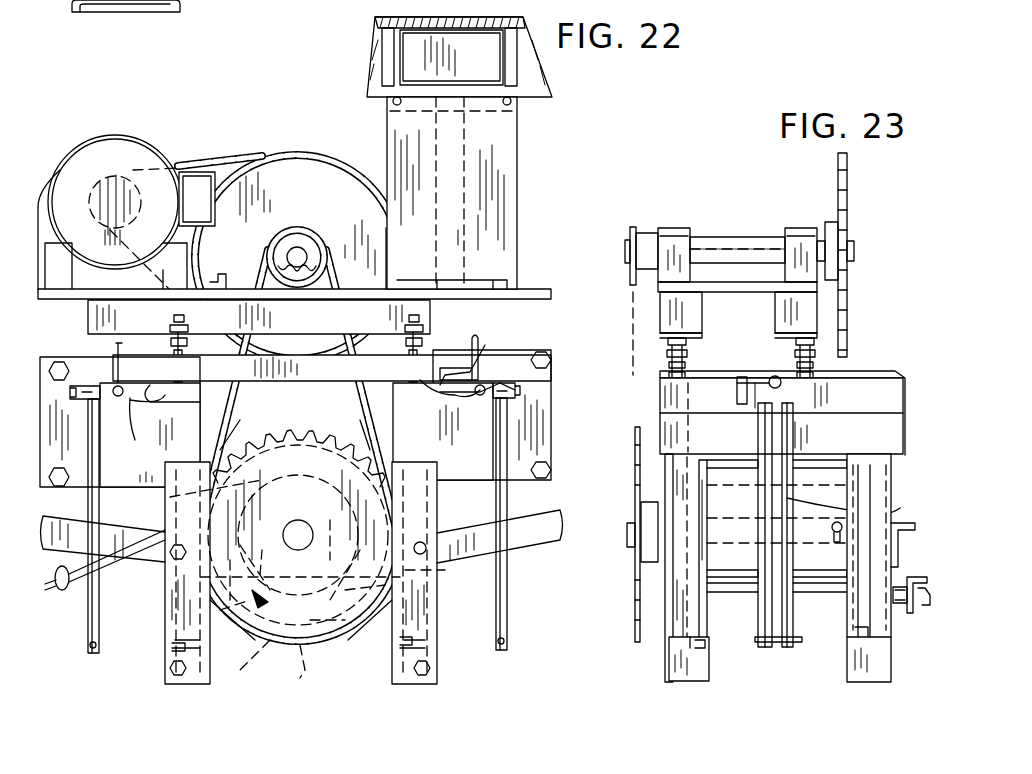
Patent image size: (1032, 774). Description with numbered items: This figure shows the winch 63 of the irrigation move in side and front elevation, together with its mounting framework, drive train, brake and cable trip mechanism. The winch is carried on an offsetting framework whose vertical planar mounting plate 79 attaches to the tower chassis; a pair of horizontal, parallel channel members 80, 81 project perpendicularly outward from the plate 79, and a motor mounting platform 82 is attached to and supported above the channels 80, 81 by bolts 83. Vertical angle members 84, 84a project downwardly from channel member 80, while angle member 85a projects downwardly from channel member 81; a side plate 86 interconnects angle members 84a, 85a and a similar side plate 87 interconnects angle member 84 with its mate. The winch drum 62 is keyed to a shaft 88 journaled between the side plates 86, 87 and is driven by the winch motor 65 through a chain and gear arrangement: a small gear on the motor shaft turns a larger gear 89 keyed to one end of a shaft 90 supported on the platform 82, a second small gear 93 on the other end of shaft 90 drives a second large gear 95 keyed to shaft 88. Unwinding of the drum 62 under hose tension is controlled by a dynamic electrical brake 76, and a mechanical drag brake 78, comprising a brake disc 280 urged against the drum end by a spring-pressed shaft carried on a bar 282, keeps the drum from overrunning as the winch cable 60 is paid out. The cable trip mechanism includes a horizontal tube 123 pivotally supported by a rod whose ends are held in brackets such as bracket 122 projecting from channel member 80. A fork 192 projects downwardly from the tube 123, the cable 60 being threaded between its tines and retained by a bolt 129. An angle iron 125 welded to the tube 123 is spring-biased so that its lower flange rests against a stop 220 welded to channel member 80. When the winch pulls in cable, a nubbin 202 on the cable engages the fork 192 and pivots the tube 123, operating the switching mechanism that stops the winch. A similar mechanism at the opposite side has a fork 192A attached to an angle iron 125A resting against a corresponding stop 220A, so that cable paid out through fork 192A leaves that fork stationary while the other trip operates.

In FIG. 22, the winch cable 60 is at (105, 560).
In FIG. 22, the winch drum 62 is at (316, 666).
In FIG. 23, the winch drum 62 is at (735, 585).
In FIG. 22, the winch 63 is at (288, 150).
In FIG. 23, the winch 63 is at (750, 226).
In FIG. 22, the winch motor 65 is at (147, 20).
In FIG. 22, the dynamic electrical brake 76 is at (517, 155).
In FIG. 23, the mechanical drag brake 78 is at (903, 612).
In FIG. 22, the vertical planar mounting plate 79 is at (545, 440).
In FIG. 22, the channel member 80 is at (390, 440).
In FIG. 23, the channel member 80 is at (888, 438).
In FIG. 22, the channel member 81 is at (164, 438).
In FIG. 22, the motor mounting platform 82 is at (445, 300).
In FIG. 23, the motor mounting platform 82 is at (745, 292).
In FIG. 22, the bolts 83 is at (172, 346).
In FIG. 23, the bolts 83 is at (668, 358).
In FIG. 23, the vertical angle member 84 is at (870, 682).
In FIG. 22, the vertical angle member 84a is at (417, 684).
In FIG. 23, the vertical angle member 84a is at (690, 681).
In FIG. 22, the vertical angle member 85a is at (193, 684).
In FIG. 22, the side plate 86 is at (290, 415).
In FIG. 23, the side plate 86 is at (665, 630).
In FIG. 23, the side plate 87 is at (925, 540).
In FIG. 22, the shaft 88 is at (298, 520).
In FIG. 23, the shaft 88 is at (627, 530).
In FIG. 22, the larger gear 89 is at (312, 199).
In FIG. 23, the larger gear 89 is at (847, 190).
In FIG. 22, the shaft 90 is at (322, 240).
In FIG. 23, the shaft 90 is at (740, 237).
In FIG. 22, the second small gear 93 is at (262, 280).
In FIG. 23, the second small gear 93 is at (633, 227).
In FIG. 22, the second large gear 95 is at (325, 430).
In FIG. 22, the bracket 122 is at (455, 410).
In FIG. 23, the bracket 122 is at (753, 420).
In FIG. 23, the horizontal tube 123 is at (895, 371).
In FIG. 22, the angle iron 125 is at (500, 375).
In FIG. 22, the angle iron 125A is at (115, 349).
In FIG. 23, the bolt 129 is at (780, 647).
In FIG. 22, the fork 192 is at (525, 512).
In FIG. 23, the fork 192 is at (866, 496).
In FIG. 22, the fork 192A is at (108, 632).
In FIG. 22, the nubbin 202 is at (70, 588).
In FIG. 22, the stop 220 is at (485, 345).
In FIG. 22, the stop 220A is at (195, 450).
In FIG. 22, the brake disc 280 is at (246, 669).
In FIG. 22, the bar 282 is at (446, 572).
In FIG. 23, the bar 282 is at (923, 602).